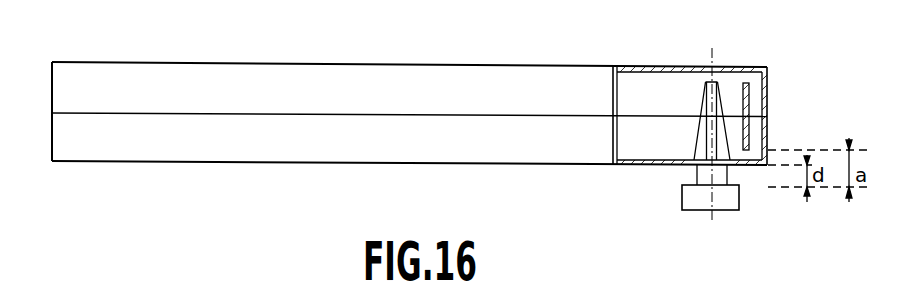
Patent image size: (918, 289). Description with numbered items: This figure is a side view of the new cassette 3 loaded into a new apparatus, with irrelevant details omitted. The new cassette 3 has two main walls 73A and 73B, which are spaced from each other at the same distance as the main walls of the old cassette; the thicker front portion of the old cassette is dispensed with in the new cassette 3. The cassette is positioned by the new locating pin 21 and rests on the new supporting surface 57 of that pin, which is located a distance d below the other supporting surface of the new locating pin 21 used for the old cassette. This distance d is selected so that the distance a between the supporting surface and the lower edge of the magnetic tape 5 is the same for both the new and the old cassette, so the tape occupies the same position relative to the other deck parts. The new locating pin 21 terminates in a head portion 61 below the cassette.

The new cassette 3 is at (202, 61).
The main wall 73A is at (403, 64).
The main wall 73B is at (403, 163).
The magnetic tape 5 is at (748, 93).
The new locating pin 21 is at (726, 140).
The new supporting surface 57 is at (697, 167).
The head 61 is at (731, 199).